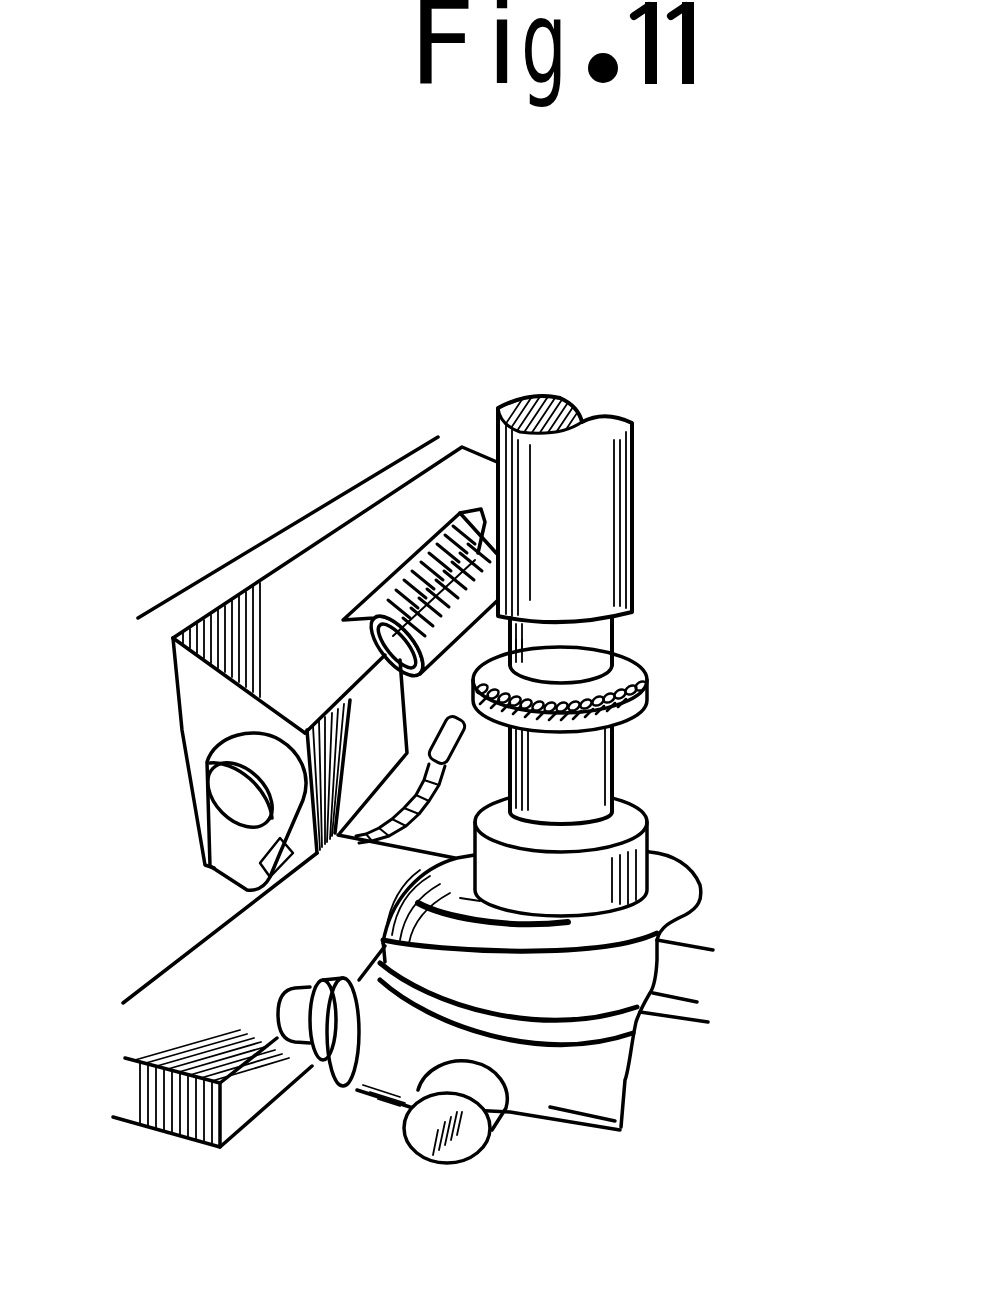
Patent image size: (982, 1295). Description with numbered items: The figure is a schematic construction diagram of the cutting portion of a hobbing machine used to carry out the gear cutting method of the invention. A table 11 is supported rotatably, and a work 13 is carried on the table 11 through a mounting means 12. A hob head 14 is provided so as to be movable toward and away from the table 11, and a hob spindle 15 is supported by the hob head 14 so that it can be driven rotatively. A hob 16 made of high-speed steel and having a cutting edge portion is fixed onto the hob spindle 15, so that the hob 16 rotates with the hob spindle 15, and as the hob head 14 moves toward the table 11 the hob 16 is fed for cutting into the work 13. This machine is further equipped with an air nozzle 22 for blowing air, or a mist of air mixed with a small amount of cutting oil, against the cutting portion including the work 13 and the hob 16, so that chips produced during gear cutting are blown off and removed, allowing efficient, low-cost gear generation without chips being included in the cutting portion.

The table 11 is at (580, 985).
The mounting means 12 is at (573, 783).
The work 13 is at (647, 708).
The hob head 14 is at (385, 542).
The hob spindle 15 is at (486, 522).
The hob 16 is at (393, 593).
The air nozzle 22 is at (437, 750).